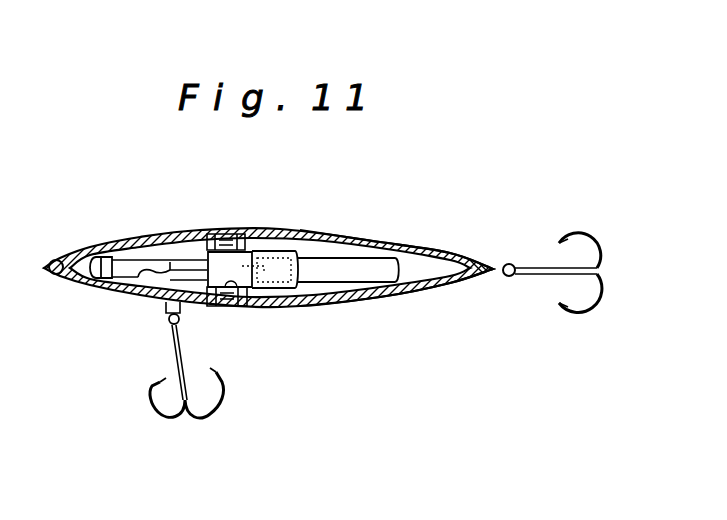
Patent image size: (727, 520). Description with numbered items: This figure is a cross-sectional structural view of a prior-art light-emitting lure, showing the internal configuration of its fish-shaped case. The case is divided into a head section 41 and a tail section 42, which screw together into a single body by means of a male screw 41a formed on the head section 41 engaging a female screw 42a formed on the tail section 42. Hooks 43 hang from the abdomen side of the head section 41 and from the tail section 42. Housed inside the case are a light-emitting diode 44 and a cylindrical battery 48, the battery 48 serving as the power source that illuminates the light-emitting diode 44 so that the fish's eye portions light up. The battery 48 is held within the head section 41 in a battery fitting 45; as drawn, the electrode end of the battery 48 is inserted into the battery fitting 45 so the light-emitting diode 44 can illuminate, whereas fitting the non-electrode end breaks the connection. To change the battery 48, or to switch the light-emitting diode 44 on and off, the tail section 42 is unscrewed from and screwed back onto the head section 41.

The head section 41 is at (112, 242).
The male screw 41a is at (232, 235).
The tail section 42 is at (358, 239).
The female screw 42a is at (236, 307).
The hooks 43 is at (572, 233).
The light-emitting diode 44 is at (104, 290).
The battery fitting 45 is at (283, 252).
The battery 48 is at (377, 268).